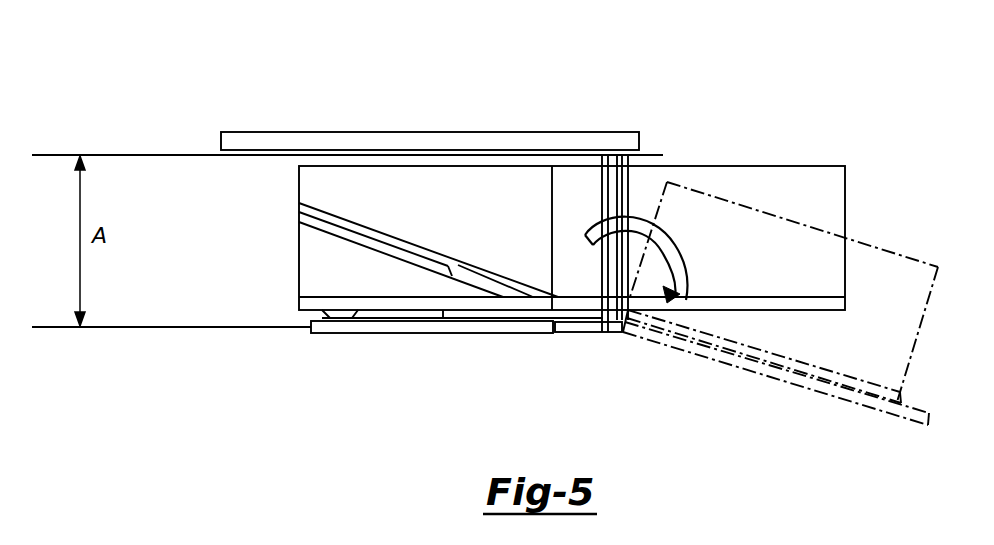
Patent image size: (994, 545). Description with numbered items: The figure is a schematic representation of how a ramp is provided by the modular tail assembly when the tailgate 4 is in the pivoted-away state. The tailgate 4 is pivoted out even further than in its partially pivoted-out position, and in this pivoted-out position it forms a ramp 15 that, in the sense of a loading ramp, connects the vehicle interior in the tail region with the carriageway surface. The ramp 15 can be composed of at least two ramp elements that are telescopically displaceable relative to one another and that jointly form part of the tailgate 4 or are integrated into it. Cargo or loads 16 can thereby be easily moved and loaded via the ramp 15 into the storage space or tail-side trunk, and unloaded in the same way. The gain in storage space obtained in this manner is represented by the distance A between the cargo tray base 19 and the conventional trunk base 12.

The tailgate 4 is at (872, 417).
The trunk base 12 is at (274, 132).
The ramp 15 is at (786, 381).
The loads 16 is at (888, 272).
The cargo tray base 19 is at (362, 333).